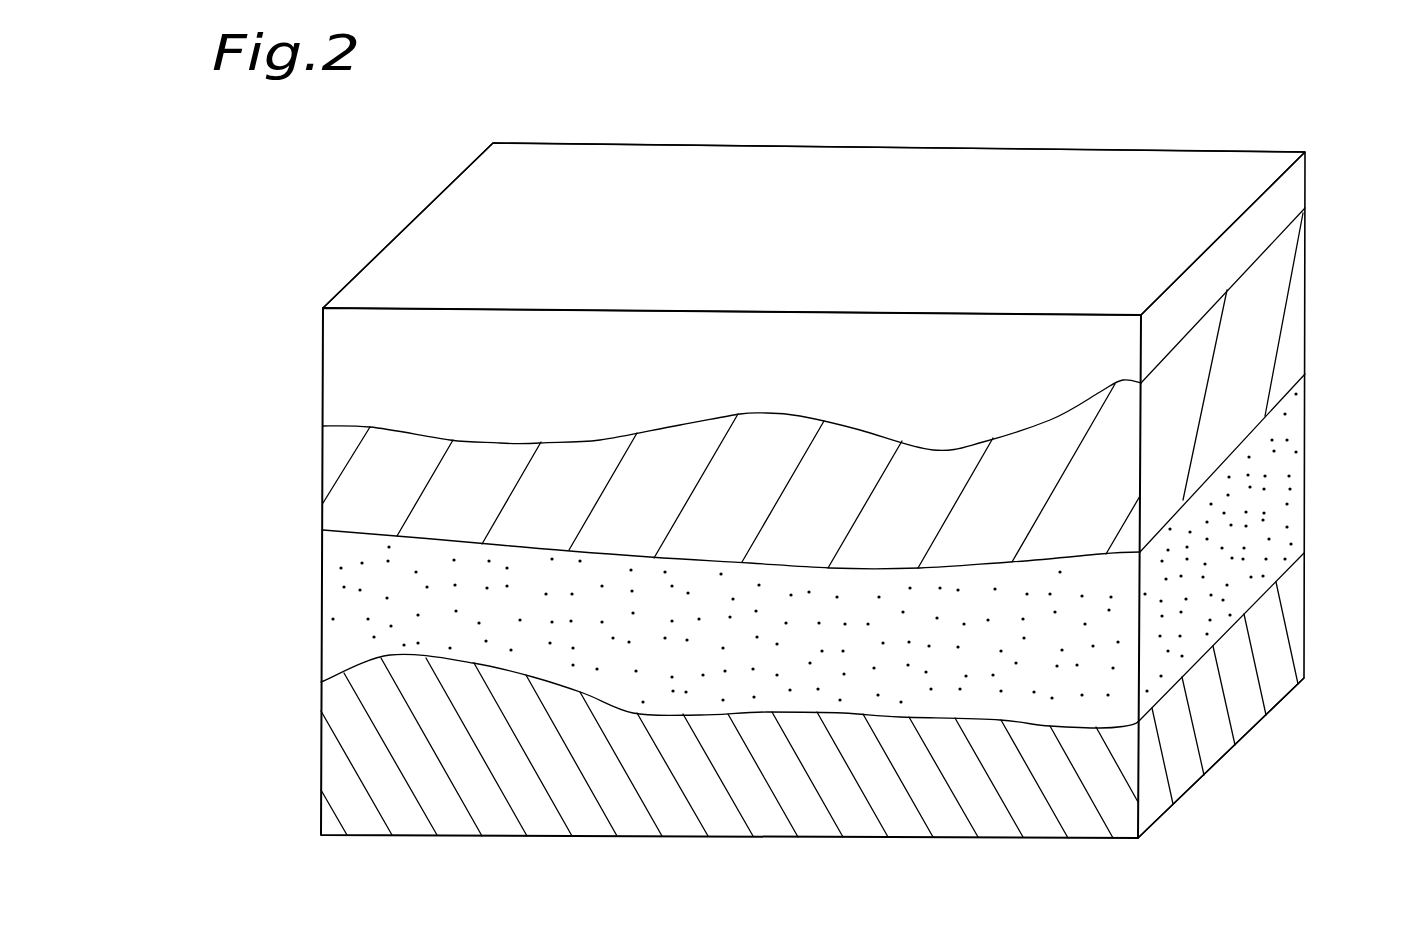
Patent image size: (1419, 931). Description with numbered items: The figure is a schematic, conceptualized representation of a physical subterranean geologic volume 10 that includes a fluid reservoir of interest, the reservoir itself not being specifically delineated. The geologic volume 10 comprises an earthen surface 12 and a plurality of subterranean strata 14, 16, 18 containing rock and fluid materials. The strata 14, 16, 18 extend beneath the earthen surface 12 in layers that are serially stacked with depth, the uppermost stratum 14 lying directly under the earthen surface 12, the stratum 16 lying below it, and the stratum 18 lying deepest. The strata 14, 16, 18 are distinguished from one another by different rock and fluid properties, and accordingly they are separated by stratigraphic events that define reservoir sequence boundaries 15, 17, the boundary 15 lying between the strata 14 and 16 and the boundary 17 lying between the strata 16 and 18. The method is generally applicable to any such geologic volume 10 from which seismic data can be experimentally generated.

The geologic volume 10 is at (1085, 82).
The earthen surface 12 is at (1235, 172).
The subterranean stratum 14 is at (1263, 312).
The reservoir sequence boundary 15 is at (1264, 416).
The subterranean stratum 16 is at (1256, 517).
The reservoir sequence boundary 17 is at (1262, 601).
The subterranean stratum 18 is at (1237, 675).